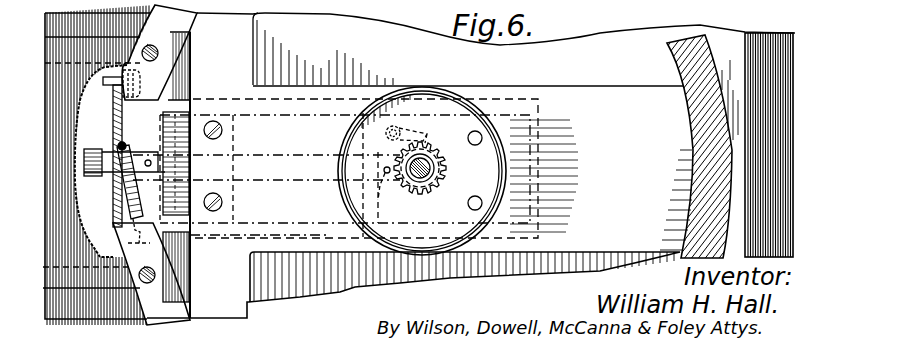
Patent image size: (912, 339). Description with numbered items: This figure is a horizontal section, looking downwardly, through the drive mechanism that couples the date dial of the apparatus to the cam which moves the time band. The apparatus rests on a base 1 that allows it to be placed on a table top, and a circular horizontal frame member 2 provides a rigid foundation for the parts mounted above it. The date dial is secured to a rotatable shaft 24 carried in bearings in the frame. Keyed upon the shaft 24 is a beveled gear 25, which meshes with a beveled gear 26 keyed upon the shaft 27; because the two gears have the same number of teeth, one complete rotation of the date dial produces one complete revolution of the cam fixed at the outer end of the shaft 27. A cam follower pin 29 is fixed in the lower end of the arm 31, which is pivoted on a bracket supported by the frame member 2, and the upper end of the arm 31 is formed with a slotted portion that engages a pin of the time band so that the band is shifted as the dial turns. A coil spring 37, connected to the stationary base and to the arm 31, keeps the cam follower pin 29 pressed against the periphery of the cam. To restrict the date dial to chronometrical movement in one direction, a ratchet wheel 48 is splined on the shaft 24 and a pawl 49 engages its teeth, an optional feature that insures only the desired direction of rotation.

The base 1 is at (783, 38).
The circular horizontal frame member 2 is at (683, 60).
The rotatable shaft 24 is at (427, 177).
The beveled gear 25 is at (446, 183).
The beveled gear 26 is at (113, 135).
The shaft 27 is at (277, 178).
The cam follower pin 29 is at (110, 85).
The arm 31 is at (127, 125).
The coil spring 37 is at (126, 207).
The ratchet wheel 48 is at (447, 160).
The pawl 49 is at (426, 132).